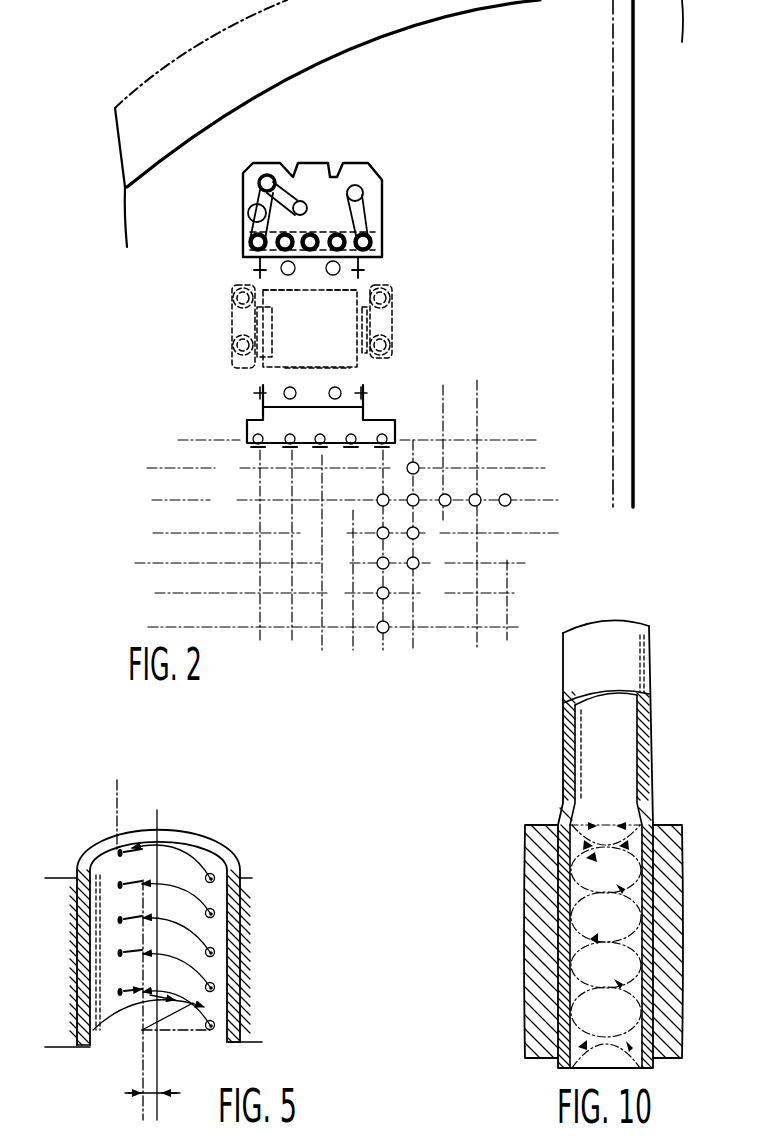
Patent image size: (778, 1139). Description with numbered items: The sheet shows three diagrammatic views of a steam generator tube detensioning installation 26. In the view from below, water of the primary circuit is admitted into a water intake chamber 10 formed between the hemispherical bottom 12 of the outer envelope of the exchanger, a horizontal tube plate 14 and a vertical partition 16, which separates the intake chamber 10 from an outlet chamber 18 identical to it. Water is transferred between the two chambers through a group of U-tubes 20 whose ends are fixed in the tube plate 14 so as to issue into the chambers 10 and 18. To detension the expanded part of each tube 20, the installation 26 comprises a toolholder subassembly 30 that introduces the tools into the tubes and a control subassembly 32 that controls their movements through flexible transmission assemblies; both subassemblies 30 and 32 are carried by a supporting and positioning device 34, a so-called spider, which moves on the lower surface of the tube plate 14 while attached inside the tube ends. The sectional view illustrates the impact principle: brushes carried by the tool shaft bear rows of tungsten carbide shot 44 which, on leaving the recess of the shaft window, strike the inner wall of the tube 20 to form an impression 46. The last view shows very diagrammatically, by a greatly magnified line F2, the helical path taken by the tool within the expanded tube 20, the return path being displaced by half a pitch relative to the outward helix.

In FIG. 2, the water intake chamber 10 is at (523, 114).
In FIG. 2, the hemispherical bottom 12 is at (200, 70).
In FIG. 5, the tube plate 14 is at (247, 937).
In FIG. 10, the tube plate 14 is at (535, 905).
In FIG. 2, the vertical partition 16 is at (597, 253).
In FIG. 2, the outlet chamber 18 is at (695, 114).
In FIG. 2, the U-tube 20 is at (478, 489).
In FIG. 5, the U-tube 20 is at (217, 852).
In FIG. 10, the U-tube 20 is at (568, 746).
In FIG. 2, the installation 26 is at (440, 228).
In FIG. 2, the toolholder subassembly 30 is at (380, 415).
In FIG. 2, the control subassembly 32 is at (384, 218).
In FIG. 2, the supporting and positioning device 34 is at (394, 300).
In FIG. 5, the shot 44 is at (214, 949).
In FIG. 5, the impression 46 is at (118, 919).
In FIG. 10, the helical path line F2 is at (612, 817).